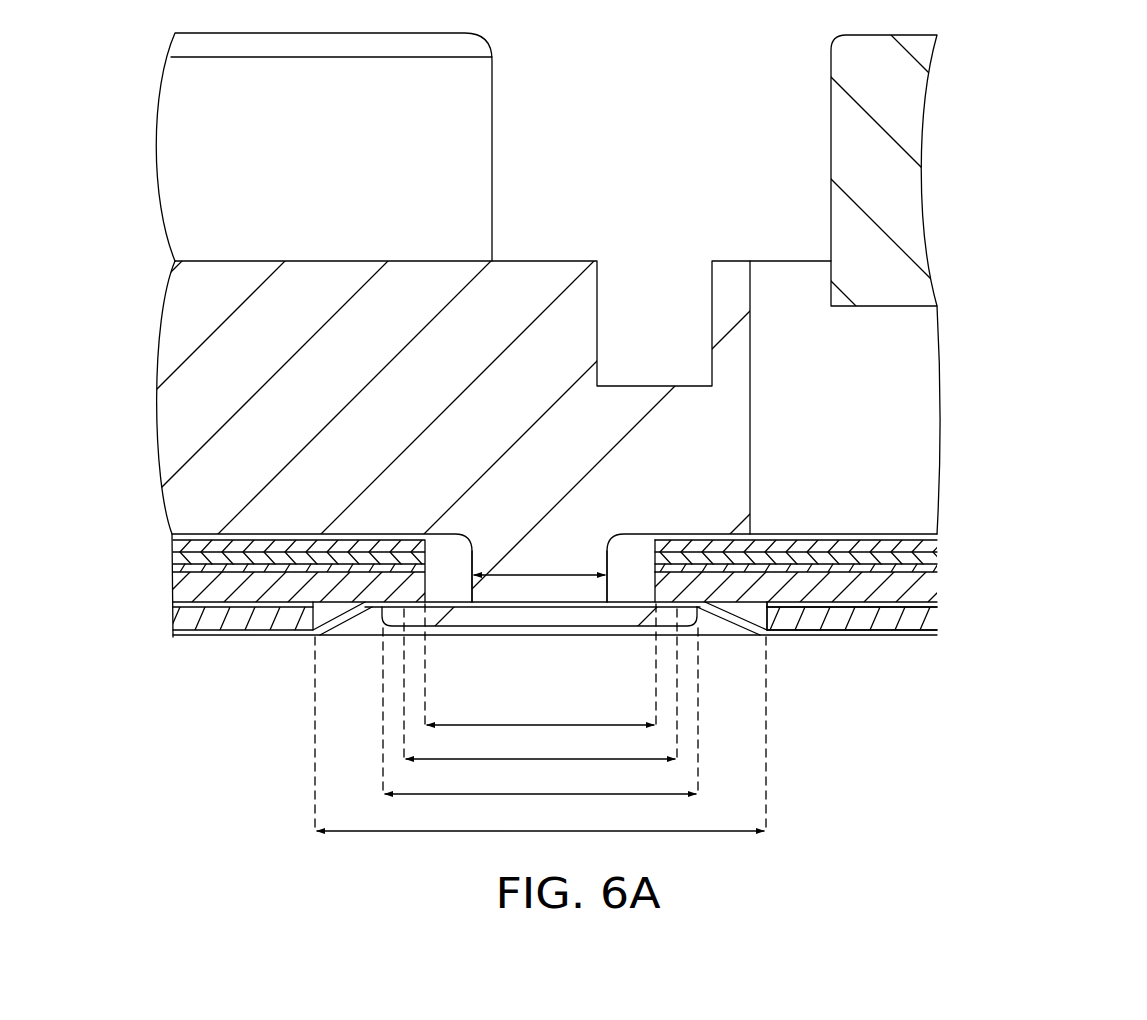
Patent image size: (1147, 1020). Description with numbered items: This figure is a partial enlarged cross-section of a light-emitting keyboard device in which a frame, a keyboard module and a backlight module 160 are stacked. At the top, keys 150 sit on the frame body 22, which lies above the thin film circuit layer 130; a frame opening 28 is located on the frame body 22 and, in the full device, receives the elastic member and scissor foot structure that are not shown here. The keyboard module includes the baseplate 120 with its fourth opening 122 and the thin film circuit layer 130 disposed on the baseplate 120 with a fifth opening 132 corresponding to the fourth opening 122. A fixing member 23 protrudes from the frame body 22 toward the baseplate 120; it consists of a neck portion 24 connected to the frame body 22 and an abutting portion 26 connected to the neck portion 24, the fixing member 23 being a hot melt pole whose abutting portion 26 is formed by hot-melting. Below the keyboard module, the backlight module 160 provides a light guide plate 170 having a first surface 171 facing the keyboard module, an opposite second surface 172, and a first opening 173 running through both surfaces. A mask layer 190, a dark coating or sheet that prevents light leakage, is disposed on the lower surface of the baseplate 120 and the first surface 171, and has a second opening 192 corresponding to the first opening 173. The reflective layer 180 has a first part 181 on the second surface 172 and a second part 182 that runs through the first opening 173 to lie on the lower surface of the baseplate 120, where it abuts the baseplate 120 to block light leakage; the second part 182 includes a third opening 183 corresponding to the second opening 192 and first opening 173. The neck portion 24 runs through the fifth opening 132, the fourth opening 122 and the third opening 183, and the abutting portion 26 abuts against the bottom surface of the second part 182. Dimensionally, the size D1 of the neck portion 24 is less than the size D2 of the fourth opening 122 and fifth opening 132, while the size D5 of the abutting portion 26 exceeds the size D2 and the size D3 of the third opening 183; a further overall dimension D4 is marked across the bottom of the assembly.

The keys 150 is at (460, 128).
The frame body 22 is at (552, 290).
The frame opening 28 is at (805, 333).
The fixing member 23 is at (573, 510).
The neck portion 24 is at (500, 604).
The abutting portion 26 is at (502, 683).
The thin film circuit layer 130 is at (631, 614).
The fifth opening 132 is at (652, 553).
The baseplate 120 is at (624, 630).
The fourth opening 122 is at (652, 583).
The backlight module 160 is at (658, 654).
The mask layer 190 is at (631, 659).
The second opening 192 is at (765, 606).
The light guide plate 170 is at (629, 674).
The first surface 171 is at (876, 605).
The second surface 172 is at (848, 633).
The first opening 173 is at (765, 618).
The reflective layer 180 is at (634, 631).
The first part 181 is at (937, 635).
The second part 182 is at (363, 622).
The third opening 183 is at (405, 606).
The size of the neck portion D1 is at (539, 560).
The size of the fourth opening and the fifth opening D2 is at (540, 711).
The size of the third opening D3 is at (540, 745).
The dimension D4 is at (540, 816).
The size of the abutting portion D5 is at (540, 780).